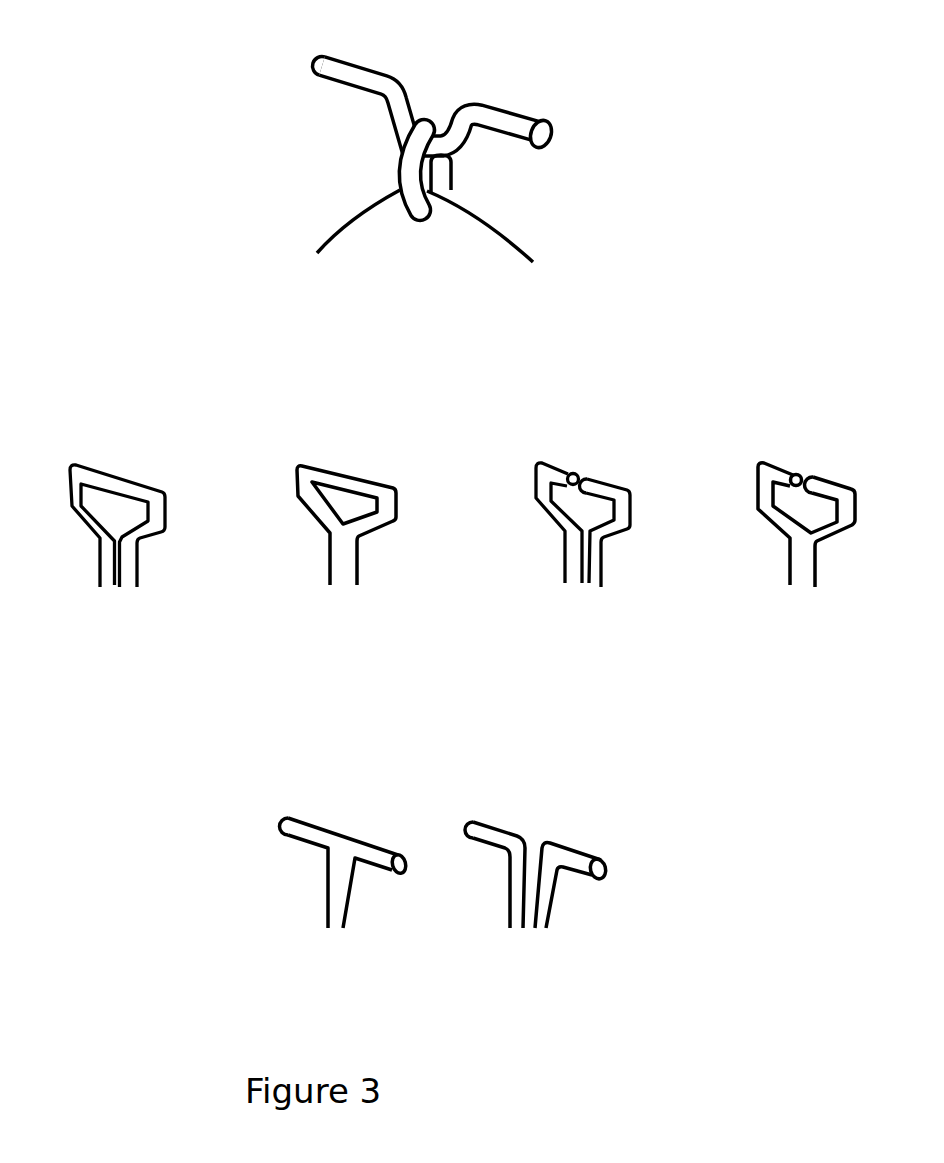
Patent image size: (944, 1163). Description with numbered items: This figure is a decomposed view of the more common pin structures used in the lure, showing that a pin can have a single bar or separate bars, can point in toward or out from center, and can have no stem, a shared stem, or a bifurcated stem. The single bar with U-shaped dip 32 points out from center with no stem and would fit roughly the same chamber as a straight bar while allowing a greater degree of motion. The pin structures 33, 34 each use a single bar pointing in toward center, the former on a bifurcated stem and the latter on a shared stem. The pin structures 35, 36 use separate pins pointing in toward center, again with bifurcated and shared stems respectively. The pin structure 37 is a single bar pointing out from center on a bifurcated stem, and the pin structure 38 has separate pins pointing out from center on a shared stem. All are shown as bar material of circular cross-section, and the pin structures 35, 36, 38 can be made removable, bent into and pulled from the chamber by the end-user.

The single bar with U-shaped dip 32 is at (305, 58).
The single bar pin with inward pins and bifurcated stem 33 is at (103, 540).
The single bar pin with inward pins and shared stem 34 is at (335, 539).
The separate pins with inward direction and bifurcated stem 35 is at (571, 539).
The separate pins with inward direction and shared stem 36 is at (792, 537).
The single bar pin with outward direction and bifurcated stem 37 is at (335, 876).
The separate pins with outward direction and shared stem 38 is at (526, 878).